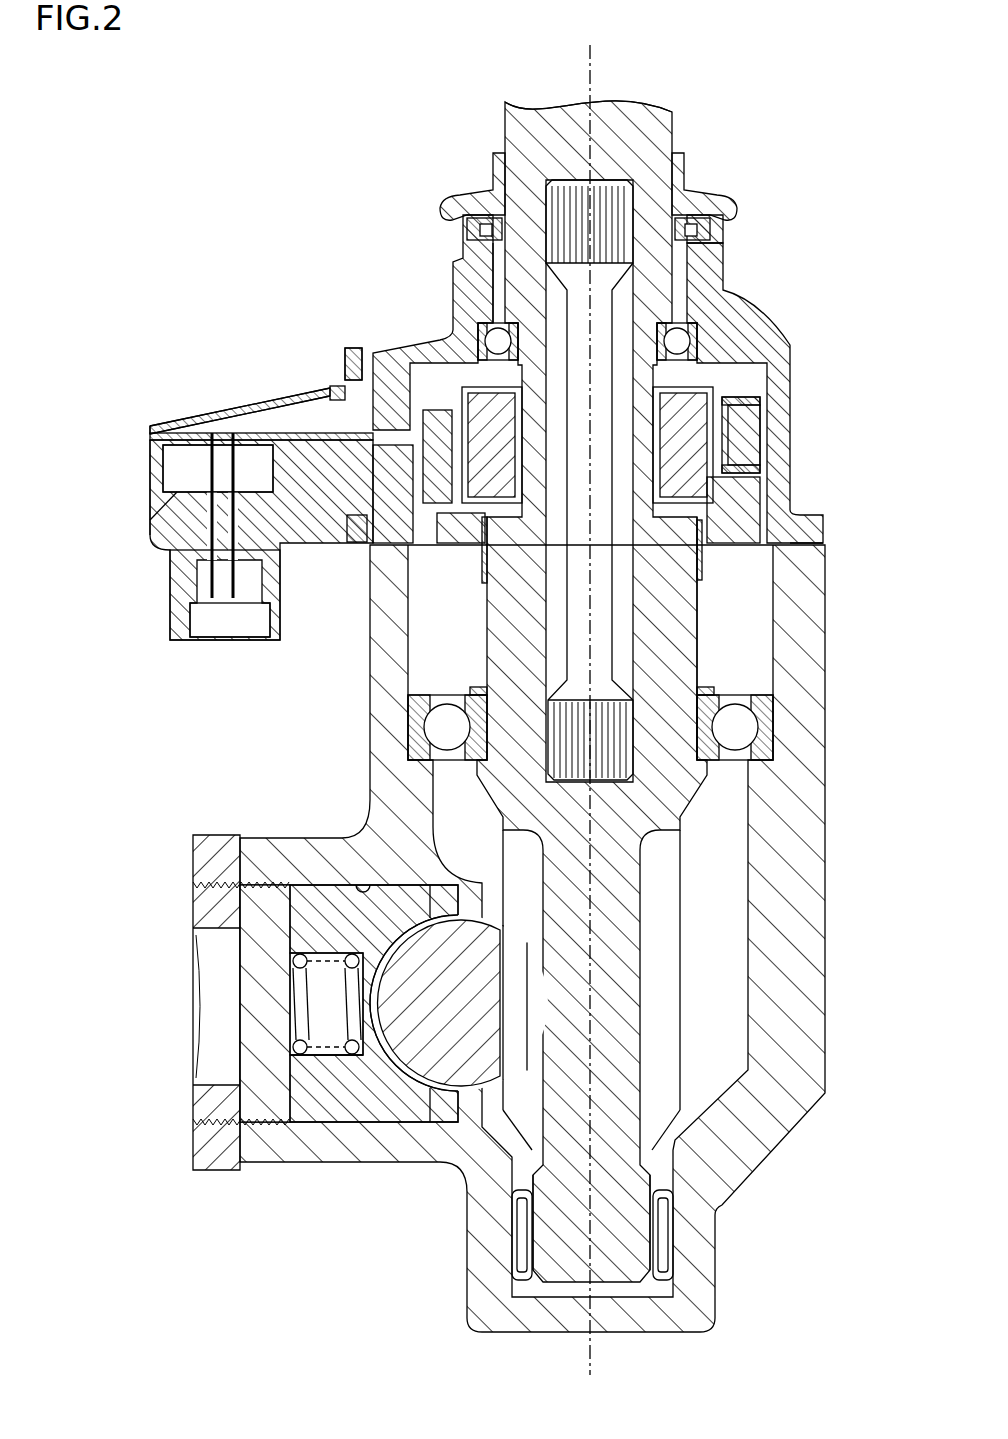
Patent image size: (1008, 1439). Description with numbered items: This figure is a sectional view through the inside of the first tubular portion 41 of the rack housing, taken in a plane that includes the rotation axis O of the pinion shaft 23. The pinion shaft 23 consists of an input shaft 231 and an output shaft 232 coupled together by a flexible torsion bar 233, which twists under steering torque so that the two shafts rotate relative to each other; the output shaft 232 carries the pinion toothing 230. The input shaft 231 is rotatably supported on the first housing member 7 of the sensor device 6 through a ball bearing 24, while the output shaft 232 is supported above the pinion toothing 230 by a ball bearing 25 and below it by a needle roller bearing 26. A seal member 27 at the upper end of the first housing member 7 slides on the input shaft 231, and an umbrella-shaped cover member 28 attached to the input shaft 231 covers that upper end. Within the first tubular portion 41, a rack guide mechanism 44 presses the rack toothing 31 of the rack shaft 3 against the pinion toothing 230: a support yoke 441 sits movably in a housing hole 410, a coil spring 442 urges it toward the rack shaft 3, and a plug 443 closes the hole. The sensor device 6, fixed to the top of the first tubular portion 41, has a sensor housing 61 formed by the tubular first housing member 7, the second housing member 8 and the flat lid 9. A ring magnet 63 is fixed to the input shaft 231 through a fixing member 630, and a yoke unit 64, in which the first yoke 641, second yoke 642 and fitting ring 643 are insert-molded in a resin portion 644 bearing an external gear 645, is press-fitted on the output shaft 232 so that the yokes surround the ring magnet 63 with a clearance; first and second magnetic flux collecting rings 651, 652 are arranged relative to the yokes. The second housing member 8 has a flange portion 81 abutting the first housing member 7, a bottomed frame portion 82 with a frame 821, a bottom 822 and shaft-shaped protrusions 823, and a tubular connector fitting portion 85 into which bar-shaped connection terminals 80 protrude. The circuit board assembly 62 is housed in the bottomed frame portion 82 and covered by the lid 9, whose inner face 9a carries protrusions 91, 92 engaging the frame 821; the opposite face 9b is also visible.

The rotation axis O is at (592, 72).
The pinion shaft 23 is at (497, 128).
The input shaft 231 is at (675, 122).
The output shaft 232 is at (700, 633).
The torsion bar 233 is at (613, 580).
The pinion toothing 230 is at (660, 962).
The ball bearing 24 is at (688, 345).
The ball bearing 25 is at (775, 725).
The needle roller bearing 26 is at (668, 1238).
The seal member 27 is at (710, 232).
The cover member 28 is at (712, 192).
The rack shaft 3 is at (450, 1070).
The rack toothing 31 is at (517, 1057).
The first tubular portion 41 is at (826, 787).
The housing hole 410 is at (363, 890).
The rack guide mechanism 44 is at (293, 880).
The support yoke 441 is at (367, 1103).
The coil spring 442 is at (353, 1053).
The plug 443 is at (200, 1147).
The sensor device 6 is at (440, 255).
The sensor housing 61 is at (150, 553).
The circuit board assembly 62 is at (300, 437).
The ring magnet 63 is at (735, 488).
The fixing member 630 is at (715, 390).
The yoke unit 64 is at (757, 395).
The first yoke 641 is at (730, 400).
The second yoke 642 is at (748, 470).
The fitting ring 643 is at (705, 560).
The resin portion 644 is at (748, 430).
The external gear 645 is at (812, 537).
The first magnetic flux collecting ring 651 is at (395, 360).
The second magnetic flux collecting ring 652 is at (367, 543).
The first housing member 7 is at (423, 345).
The second housing member 8 is at (150, 527).
The connection terminals 80 is at (227, 578).
The flange portion 81 is at (352, 348).
The bottomed frame portion 82 is at (85, 503).
The frame 821 is at (160, 467).
The bottom 822 is at (182, 518).
The shaft-shaped protrusions 823 is at (277, 430).
The connector fitting portion 85 is at (187, 620).
The lid 9 is at (230, 415).
The inner face 9a is at (250, 425).
The board lower surface 9b is at (200, 417).
The protrusion 91 is at (170, 432).
The protrusion 92 is at (330, 395).